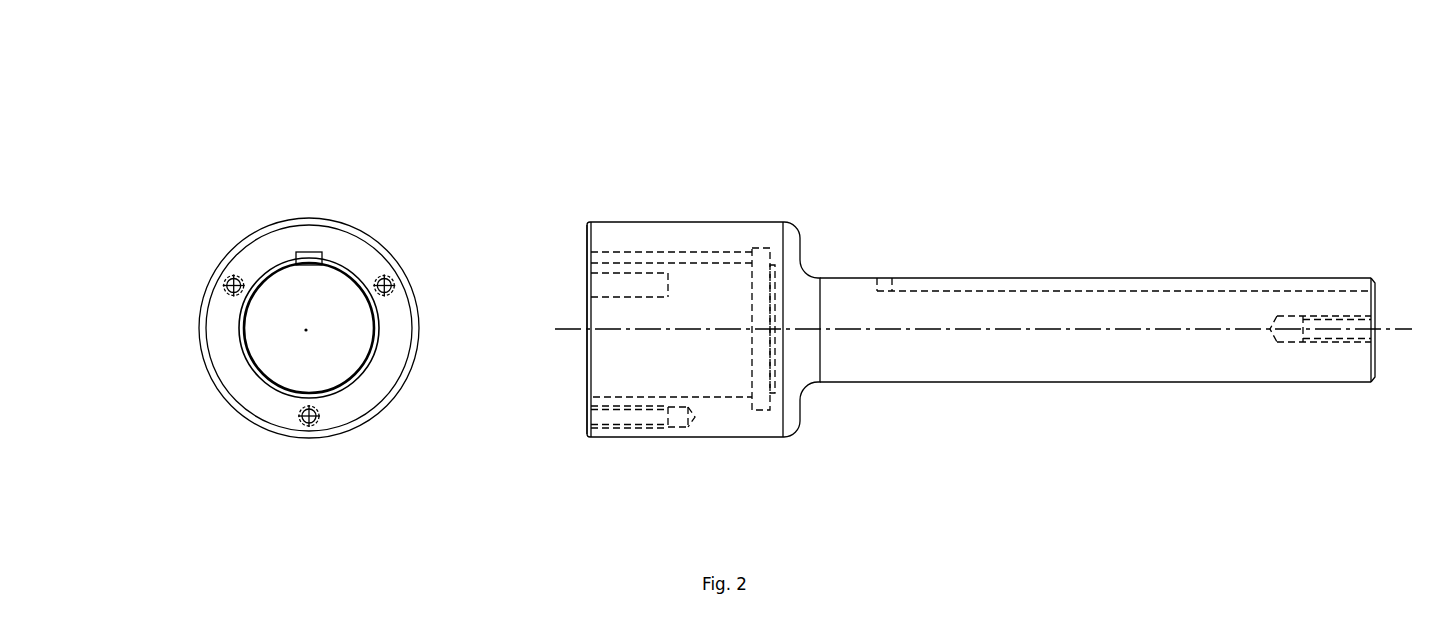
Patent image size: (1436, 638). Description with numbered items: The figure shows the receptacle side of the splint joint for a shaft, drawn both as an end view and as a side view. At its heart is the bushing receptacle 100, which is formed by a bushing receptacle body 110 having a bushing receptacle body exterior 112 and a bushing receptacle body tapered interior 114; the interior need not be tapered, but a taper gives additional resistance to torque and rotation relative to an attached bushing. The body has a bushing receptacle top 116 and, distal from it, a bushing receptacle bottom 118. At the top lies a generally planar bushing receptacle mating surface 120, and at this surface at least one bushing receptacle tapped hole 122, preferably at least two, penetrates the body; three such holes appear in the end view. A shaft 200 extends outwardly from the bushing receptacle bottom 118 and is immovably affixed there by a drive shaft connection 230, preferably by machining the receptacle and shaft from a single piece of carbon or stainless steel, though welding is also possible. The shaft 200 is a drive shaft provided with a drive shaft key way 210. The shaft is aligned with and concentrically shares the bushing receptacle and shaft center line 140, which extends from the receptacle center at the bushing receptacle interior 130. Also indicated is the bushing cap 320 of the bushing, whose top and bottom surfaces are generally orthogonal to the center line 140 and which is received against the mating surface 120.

The bushing receptacle 100 is at (703, 271).
The bushing receptacle body 110 is at (703, 280).
The bushing receptacle body exterior 112 is at (603, 456).
The bushing receptacle body tapered interior 114 is at (709, 287).
The bushing receptacle top 116 is at (658, 193).
The bushing receptacle bottom 118 is at (838, 364).
The bushing receptacle mating surface 120 is at (396, 286).
The bushing receptacle tapped hole 122 is at (396, 359).
The bushing receptacle interior 130 is at (428, 356).
The bushing receptacle and shaft center line 140 is at (776, 306).
The shaft 200 is at (1092, 237).
The drive shaft key way 210 is at (1097, 274).
The drive shaft connection 230 is at (1090, 247).
The bushing cap 320 is at (395, 264).